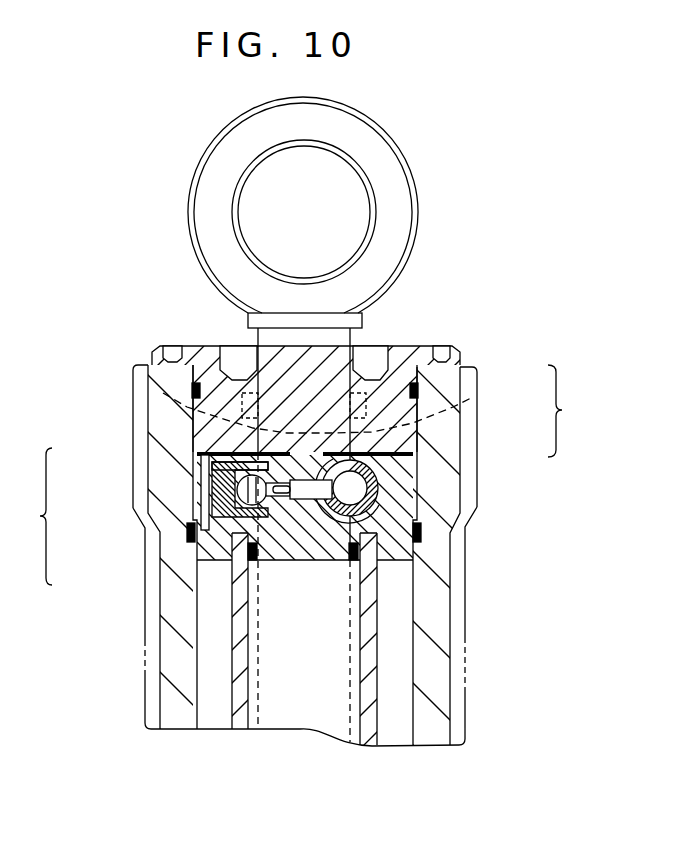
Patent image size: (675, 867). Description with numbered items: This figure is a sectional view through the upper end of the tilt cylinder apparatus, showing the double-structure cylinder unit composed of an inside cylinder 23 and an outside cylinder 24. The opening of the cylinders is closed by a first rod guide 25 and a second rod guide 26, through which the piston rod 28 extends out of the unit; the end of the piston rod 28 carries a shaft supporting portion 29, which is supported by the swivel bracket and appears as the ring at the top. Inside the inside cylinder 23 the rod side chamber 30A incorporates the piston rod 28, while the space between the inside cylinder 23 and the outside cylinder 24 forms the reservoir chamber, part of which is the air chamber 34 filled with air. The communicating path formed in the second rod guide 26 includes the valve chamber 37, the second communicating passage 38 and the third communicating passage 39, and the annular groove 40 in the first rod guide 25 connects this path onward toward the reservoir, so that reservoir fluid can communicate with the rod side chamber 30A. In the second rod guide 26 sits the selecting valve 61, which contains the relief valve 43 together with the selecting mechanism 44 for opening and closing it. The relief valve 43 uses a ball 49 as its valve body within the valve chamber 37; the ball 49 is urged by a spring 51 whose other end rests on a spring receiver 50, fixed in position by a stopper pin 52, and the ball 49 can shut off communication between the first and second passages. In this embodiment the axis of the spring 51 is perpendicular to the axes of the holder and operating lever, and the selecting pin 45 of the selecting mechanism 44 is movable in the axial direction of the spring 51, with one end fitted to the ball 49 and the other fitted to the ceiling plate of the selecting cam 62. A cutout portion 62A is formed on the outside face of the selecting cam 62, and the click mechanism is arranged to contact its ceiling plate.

The shaft supporting portion 29 is at (362, 180).
The piston rod 28 is at (350, 337).
The first rod guide 25 is at (210, 354).
The selecting pin 45 is at (322, 443).
The outside cylinder 24 is at (160, 633).
The air chamber 34 is at (400, 707).
The second communicating passage 38 is at (300, 520).
The inside cylinder 23 is at (233, 687).
The selecting valve 61 is at (375, 597).
The valve chamber 37 is at (260, 550).
The second rod guide 26 is at (193, 545).
The annular groove 40 is at (197, 452).
The third communicating passage 39 is at (163, 393).
The stopper pin 52 is at (204, 529).
The ball 49 is at (214, 498).
The spring receiver 50 is at (213, 467).
The spring 51 is at (238, 492).
The relief valve 43 is at (29, 516).
The cutout portion 62A is at (380, 518).
The selecting cam 62 is at (368, 488).
The selecting mechanism 44 is at (575, 411).
The rod side chamber 30A is at (338, 668).